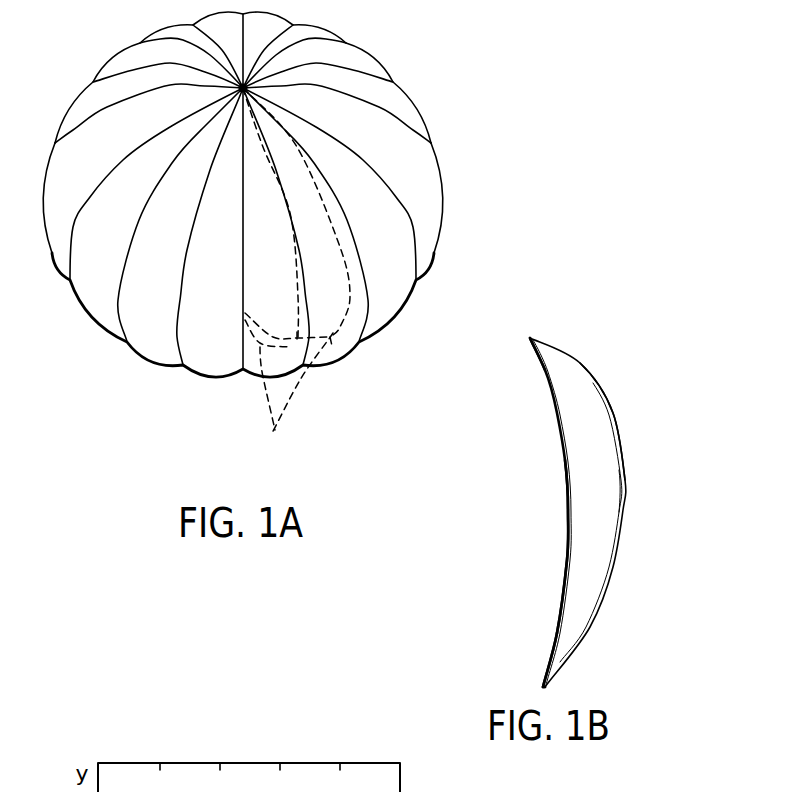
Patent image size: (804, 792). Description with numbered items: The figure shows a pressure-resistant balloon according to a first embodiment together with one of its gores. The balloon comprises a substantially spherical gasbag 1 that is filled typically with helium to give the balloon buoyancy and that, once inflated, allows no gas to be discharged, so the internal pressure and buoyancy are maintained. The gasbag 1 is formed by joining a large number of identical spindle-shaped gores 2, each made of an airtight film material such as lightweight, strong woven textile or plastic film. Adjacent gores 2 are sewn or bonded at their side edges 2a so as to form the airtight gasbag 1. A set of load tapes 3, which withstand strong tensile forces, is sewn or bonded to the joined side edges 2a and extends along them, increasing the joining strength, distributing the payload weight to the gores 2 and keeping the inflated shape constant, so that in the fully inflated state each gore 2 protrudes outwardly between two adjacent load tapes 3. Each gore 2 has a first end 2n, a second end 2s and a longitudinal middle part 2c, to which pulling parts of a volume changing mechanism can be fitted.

In FIG. 1A, the gasbag 1 is at (402, 32).
In FIG. 1A, the gore 2 is at (165, 358).
In FIG. 1B, the gore 2 is at (582, 380).
In FIG. 1A, the load tape 3 is at (243, 337).
In FIG. 1B, the first end 2n is at (533, 337).
In FIG. 1B, the side edge 2a is at (614, 413).
In FIG. 1B, the longitudinal middle part 2c is at (596, 497).
In FIG. 1B, the second end 2s is at (542, 685).